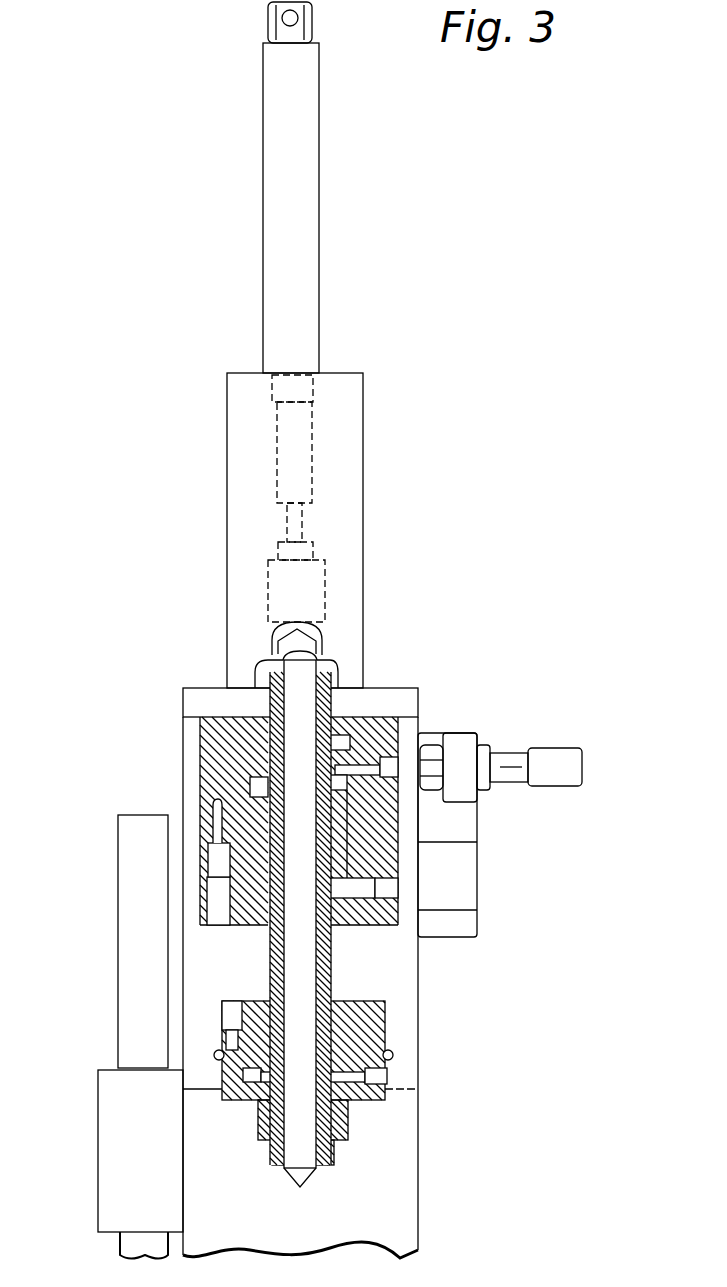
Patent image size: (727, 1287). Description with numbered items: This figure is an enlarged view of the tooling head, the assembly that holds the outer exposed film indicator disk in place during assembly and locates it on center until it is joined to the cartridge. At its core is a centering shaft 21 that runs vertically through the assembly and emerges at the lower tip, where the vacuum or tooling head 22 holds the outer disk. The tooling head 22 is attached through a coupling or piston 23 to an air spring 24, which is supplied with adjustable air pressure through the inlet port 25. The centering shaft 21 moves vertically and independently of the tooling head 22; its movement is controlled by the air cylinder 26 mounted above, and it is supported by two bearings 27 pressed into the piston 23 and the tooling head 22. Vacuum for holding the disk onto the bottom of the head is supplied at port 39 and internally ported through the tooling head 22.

The centering shaft 21 is at (305, 1183).
The tooling head 22 is at (385, 1028).
The piston 23 is at (273, 963).
The air spring 24 is at (200, 836).
The inlet port 25 is at (392, 760).
The air cylinder 26 is at (263, 113).
The bearings 27 is at (268, 700).
The vacuum port 39 is at (387, 1078).